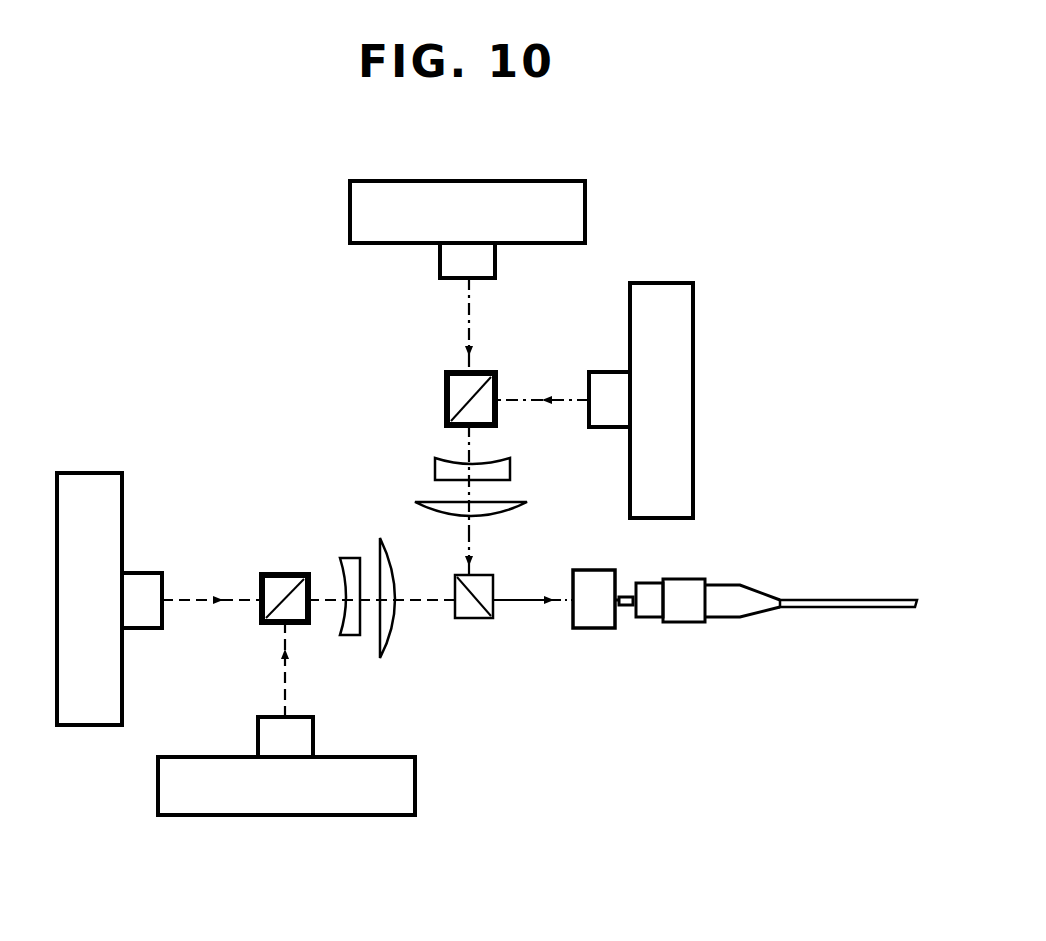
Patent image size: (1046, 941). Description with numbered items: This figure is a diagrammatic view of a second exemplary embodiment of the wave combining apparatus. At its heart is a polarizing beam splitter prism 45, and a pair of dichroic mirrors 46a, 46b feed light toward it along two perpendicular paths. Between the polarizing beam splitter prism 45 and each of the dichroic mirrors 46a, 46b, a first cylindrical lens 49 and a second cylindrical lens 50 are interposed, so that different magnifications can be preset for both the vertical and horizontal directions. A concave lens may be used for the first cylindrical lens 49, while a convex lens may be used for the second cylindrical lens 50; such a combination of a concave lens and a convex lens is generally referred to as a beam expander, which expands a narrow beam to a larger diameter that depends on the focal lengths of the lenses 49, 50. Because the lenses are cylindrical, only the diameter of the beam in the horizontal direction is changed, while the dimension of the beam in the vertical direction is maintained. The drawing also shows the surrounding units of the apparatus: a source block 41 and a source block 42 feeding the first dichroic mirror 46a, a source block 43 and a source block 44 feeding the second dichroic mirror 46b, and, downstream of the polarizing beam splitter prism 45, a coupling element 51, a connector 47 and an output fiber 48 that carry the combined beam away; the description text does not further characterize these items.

The first light source 41 is at (107, 473).
The second light source 42 is at (206, 815).
The third light source 43 is at (540, 181).
The fourth light source 44 is at (649, 283).
The polarizing beam splitter prism 45 is at (475, 620).
The dichroic mirror 46a is at (285, 575).
The dichroic mirror 46b is at (447, 395).
The optical connector 47 is at (636, 632).
The optical fiber 48 is at (855, 598).
The first cylindrical lens 49 is at (510, 470).
The second cylindrical lens 50 is at (520, 505).
The coupling lens 51 is at (588, 628).